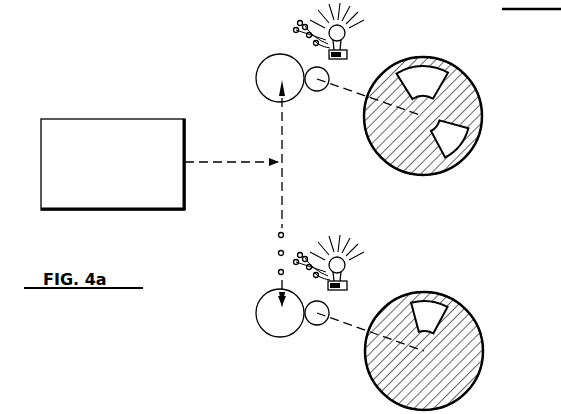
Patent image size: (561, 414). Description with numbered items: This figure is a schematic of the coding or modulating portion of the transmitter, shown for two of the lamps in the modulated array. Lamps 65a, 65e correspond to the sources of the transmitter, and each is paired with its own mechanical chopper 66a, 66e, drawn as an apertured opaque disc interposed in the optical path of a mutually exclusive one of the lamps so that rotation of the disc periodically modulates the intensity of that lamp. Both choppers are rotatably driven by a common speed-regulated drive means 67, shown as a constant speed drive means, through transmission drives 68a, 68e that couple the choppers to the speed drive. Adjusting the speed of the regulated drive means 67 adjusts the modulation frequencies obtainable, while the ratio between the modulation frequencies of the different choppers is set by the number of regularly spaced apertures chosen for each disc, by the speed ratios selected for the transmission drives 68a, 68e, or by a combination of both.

The speed-regulated drive means 67 is at (90, 128).
The transmission drive 68a is at (297, 102).
The transmission drive 68e is at (300, 333).
The lamp 65a is at (345, 44).
The lamp 65e is at (345, 275).
The mechanical chopper 66a is at (466, 117).
The mechanical chopper 66e is at (483, 335).